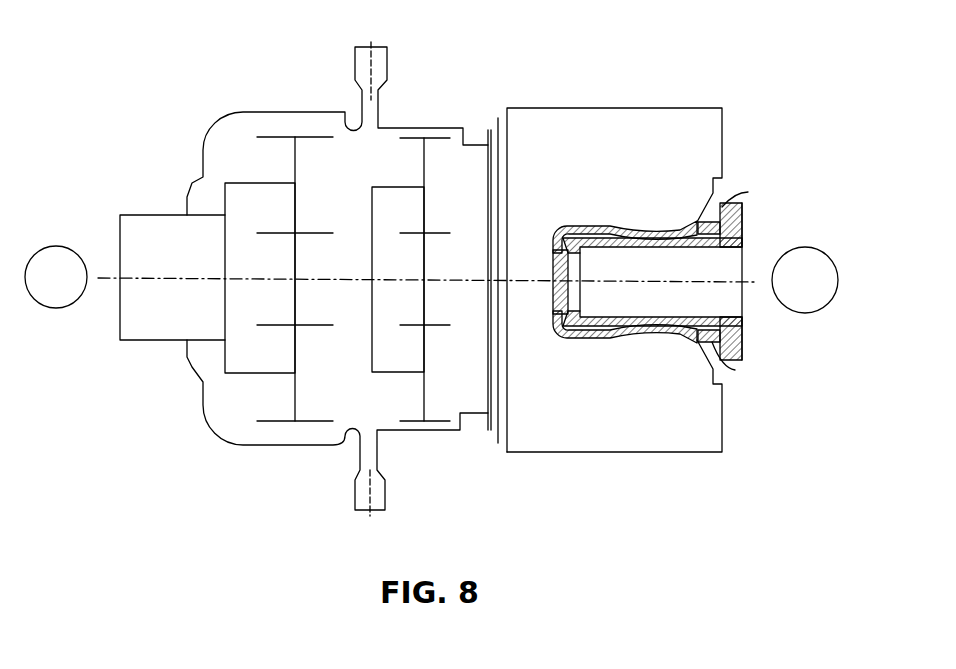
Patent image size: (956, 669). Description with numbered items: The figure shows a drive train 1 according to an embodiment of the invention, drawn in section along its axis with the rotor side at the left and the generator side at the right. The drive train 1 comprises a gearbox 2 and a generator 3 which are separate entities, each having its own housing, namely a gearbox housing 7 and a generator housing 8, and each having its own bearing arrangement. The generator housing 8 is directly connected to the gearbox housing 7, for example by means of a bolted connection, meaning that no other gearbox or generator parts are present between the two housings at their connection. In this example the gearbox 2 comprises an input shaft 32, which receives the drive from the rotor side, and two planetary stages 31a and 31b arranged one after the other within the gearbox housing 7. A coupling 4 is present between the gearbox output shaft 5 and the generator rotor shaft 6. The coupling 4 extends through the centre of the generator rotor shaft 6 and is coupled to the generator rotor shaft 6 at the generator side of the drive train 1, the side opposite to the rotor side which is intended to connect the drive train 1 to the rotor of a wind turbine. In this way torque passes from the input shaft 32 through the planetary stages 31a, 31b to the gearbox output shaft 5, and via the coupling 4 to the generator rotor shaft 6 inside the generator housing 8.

The drive train 1 is at (431, 267).
The gearbox 2 is at (298, 287).
The generator 3 is at (625, 299).
The coupling 4 is at (725, 196).
The gearbox output shaft 5 is at (583, 240).
The generator rotor shaft 6 is at (713, 218).
The gearbox housing 7 is at (292, 118).
The generator housing 8 is at (580, 120).
The first planetary stage 31a is at (245, 161).
The second planetary stage 31b is at (403, 161).
The input shaft 32 is at (143, 230).